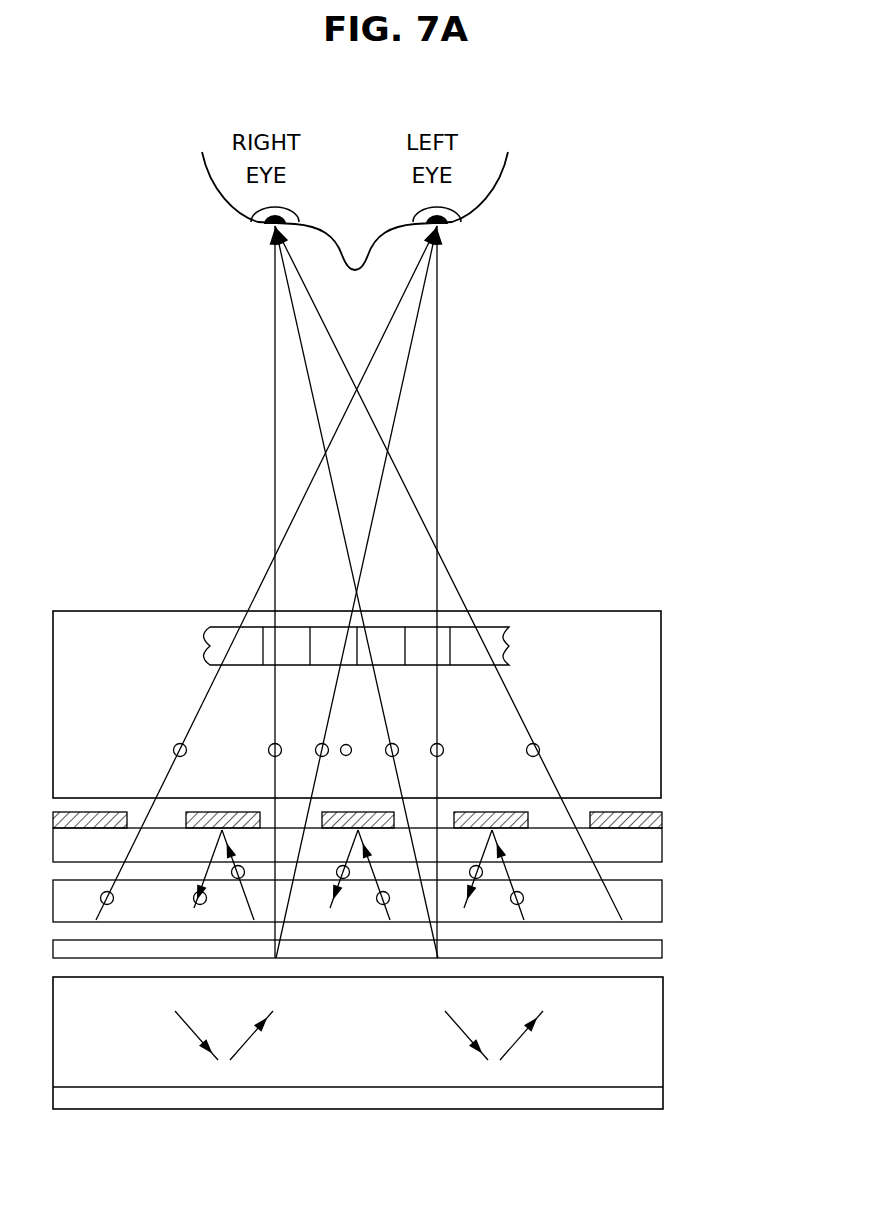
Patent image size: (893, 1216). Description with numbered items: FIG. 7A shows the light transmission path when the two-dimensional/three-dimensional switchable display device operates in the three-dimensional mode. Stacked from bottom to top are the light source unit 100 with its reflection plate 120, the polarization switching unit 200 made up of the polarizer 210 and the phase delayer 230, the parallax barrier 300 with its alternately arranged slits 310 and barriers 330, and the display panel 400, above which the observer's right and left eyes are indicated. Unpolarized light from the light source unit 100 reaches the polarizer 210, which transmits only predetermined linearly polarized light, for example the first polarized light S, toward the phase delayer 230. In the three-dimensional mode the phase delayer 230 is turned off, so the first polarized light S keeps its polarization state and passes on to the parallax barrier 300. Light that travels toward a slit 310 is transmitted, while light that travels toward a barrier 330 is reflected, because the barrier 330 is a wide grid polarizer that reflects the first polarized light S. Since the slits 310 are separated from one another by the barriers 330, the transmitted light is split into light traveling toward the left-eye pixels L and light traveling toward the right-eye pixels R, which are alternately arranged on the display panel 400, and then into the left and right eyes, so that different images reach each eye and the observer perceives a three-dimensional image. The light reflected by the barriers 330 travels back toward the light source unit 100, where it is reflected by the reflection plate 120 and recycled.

The light source unit 100 is at (404, 1043).
The reflection plate 120 is at (648, 1098).
The polarization switching unit 200 is at (439, 921).
The polarizer 210 is at (648, 950).
The phase delayer 230 is at (648, 898).
The parallax barrier 300 is at (439, 833).
The slit 310 is at (573, 816).
The barrier 330 is at (662, 826).
The display panel 400 is at (648, 700).